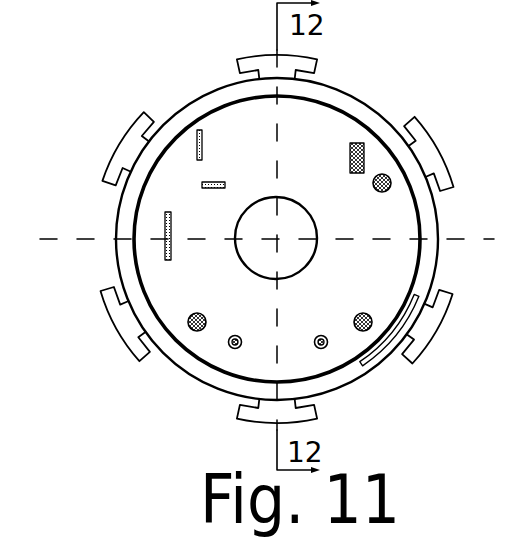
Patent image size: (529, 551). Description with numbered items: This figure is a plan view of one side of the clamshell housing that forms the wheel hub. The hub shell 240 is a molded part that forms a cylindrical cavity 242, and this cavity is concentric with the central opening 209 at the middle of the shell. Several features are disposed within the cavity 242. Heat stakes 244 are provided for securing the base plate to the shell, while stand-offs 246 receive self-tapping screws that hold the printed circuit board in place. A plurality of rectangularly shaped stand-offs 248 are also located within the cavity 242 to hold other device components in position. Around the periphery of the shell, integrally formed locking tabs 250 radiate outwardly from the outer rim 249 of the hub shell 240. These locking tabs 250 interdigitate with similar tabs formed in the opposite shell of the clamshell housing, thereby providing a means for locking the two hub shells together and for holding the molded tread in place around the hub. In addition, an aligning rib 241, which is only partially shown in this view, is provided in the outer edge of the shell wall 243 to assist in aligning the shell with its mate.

The hub shell 240 is at (190, 373).
The outer rim 249 is at (122, 258).
The central opening 209 is at (318, 234).
The cylindrical cavity 242 is at (234, 126).
The locking tabs 250 is at (413, 124).
The shell wall 243 is at (392, 357).
The aligning rib 241 is at (407, 317).
The heat stakes 244 is at (357, 316).
The stand-offs 246 is at (242, 344).
The rectangularly shaped stand-offs 248 is at (165, 226).